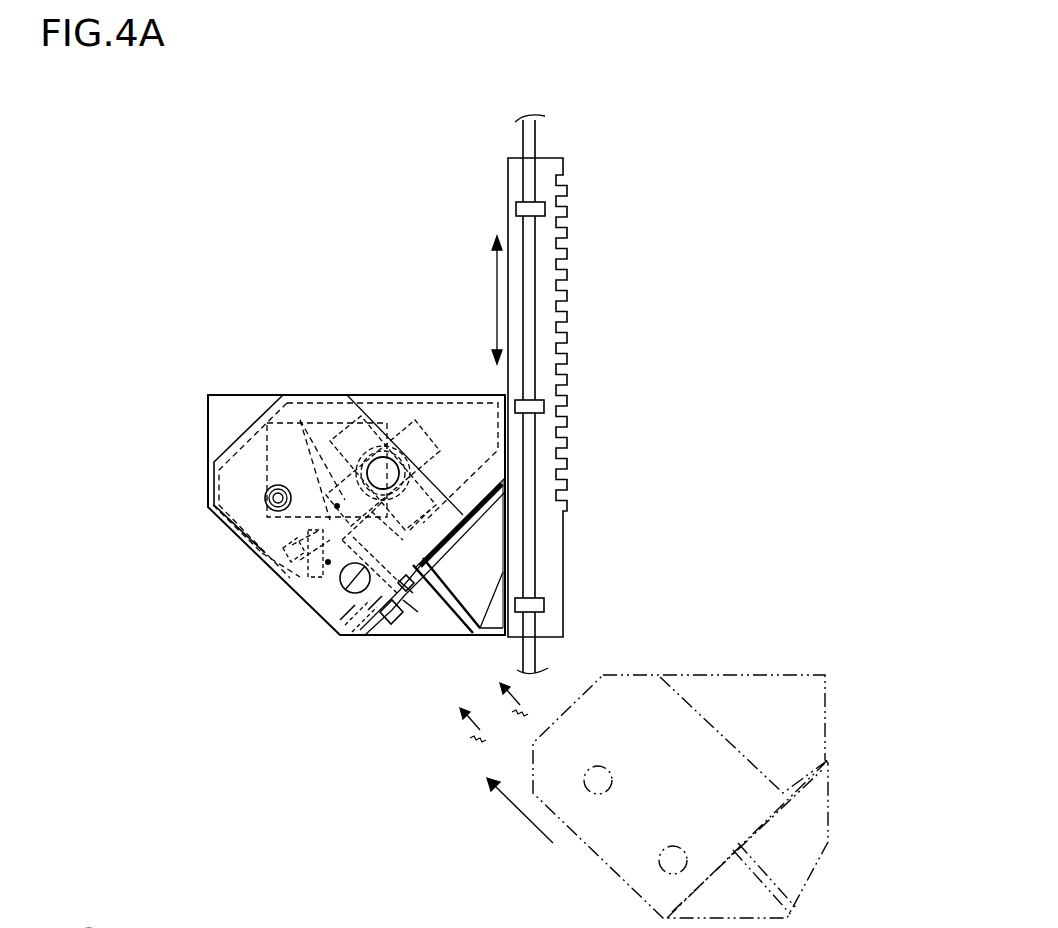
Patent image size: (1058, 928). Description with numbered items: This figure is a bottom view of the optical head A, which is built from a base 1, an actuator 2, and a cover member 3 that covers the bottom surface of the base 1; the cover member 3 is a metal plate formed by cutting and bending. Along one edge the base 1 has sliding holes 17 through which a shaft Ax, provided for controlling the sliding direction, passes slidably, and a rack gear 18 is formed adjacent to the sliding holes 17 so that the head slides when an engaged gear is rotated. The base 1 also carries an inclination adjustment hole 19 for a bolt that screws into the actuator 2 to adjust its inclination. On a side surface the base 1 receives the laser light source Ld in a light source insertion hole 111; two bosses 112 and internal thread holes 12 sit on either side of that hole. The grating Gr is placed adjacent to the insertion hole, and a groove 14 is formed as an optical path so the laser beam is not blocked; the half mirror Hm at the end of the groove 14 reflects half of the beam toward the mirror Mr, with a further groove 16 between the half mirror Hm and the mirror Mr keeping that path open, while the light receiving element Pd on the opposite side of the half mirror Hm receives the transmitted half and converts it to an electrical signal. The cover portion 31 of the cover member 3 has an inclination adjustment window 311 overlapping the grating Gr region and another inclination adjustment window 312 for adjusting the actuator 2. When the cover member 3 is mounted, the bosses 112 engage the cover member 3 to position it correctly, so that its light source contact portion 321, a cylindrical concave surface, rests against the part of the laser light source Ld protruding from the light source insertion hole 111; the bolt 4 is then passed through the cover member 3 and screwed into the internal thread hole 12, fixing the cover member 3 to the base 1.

The base 1 is at (443, 393).
The actuator 2 is at (300, 420).
The cover member 3 is at (228, 447).
The bolt 4 is at (448, 580).
The internal thread hole 12 is at (405, 540).
The groove 14 is at (300, 577).
The groove 16 is at (276, 425).
The sliding hole 17 is at (545, 208).
The rack gear 18 is at (565, 360).
The inclination adjustment hole 19 is at (273, 492).
The cover portion 31 is at (225, 520).
The inclination adjustment window 311 is at (347, 590).
The inclination adjustment window 312 is at (265, 498).
The light source contact portion 321 is at (352, 640).
The light source insertion hole 111 is at (352, 628).
The boss 112 is at (417, 587).
The optical head A is at (177, 160).
The shaft Ax is at (530, 170).
The mirror Mr is at (380, 468).
The half mirror Hm is at (285, 545).
The light receiving element Pd is at (322, 562).
The grating Gr is at (343, 623).
The laser light source Ld is at (378, 615).